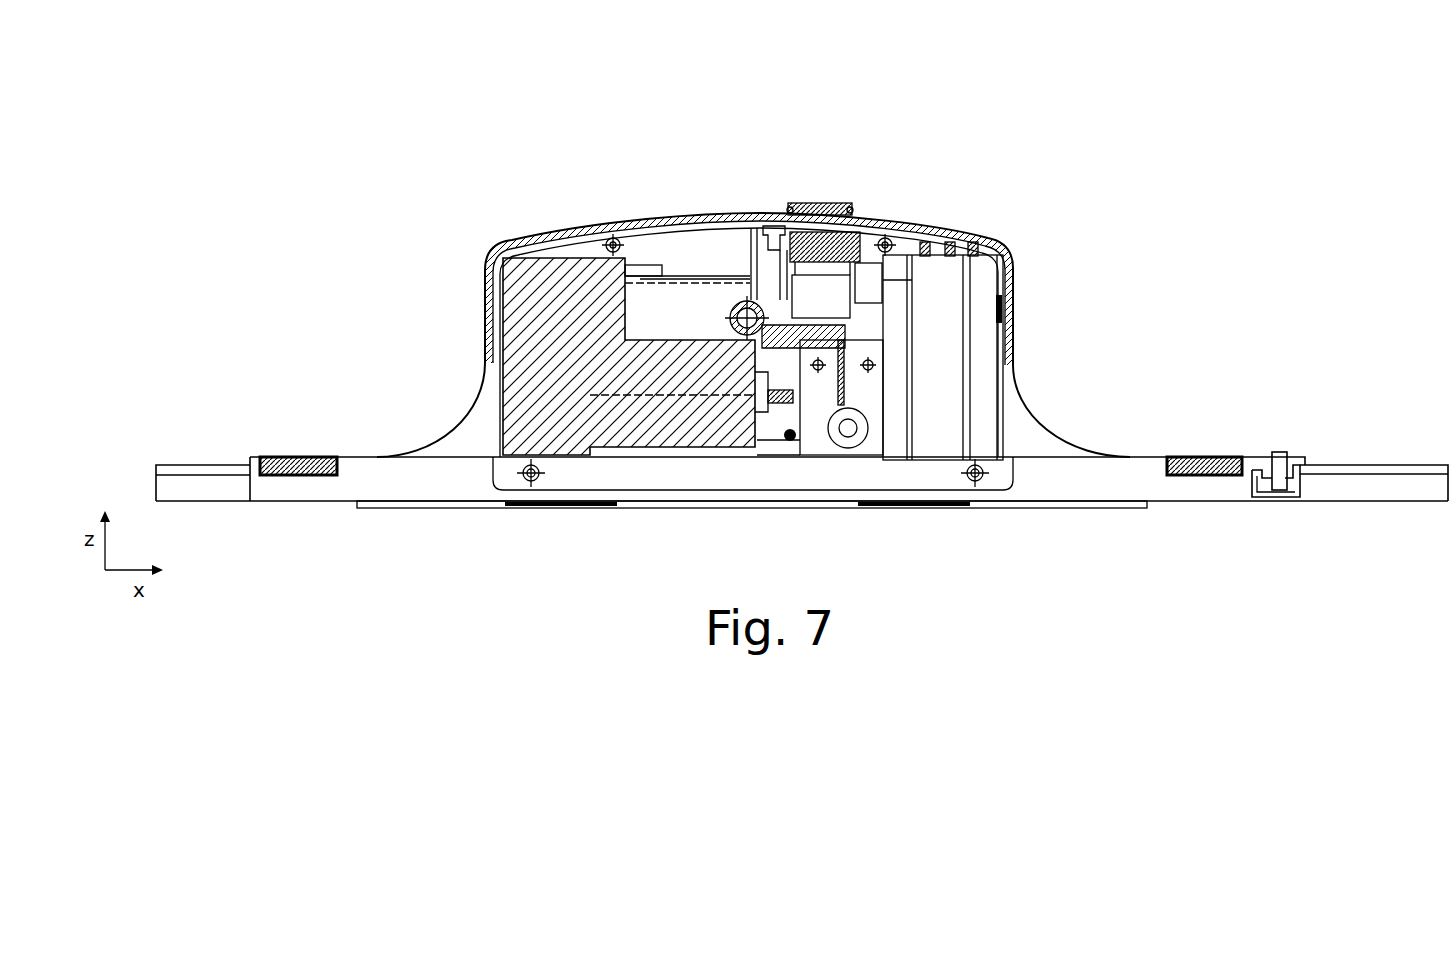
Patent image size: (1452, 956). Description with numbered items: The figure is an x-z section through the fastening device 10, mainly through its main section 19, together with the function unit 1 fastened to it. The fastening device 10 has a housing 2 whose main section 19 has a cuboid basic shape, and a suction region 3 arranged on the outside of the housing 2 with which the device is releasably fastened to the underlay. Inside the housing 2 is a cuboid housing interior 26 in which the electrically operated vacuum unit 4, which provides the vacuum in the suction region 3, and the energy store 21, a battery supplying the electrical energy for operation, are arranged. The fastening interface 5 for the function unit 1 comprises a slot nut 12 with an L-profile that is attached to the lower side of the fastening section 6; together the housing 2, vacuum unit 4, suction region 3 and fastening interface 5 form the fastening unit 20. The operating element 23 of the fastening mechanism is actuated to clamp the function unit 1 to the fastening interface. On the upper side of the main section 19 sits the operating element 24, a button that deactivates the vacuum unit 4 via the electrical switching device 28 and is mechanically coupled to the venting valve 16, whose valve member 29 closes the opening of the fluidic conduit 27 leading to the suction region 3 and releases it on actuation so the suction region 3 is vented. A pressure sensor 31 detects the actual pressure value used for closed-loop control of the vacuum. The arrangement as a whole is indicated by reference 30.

The function unit 1 is at (203, 485).
The housing 2 is at (753, 281).
The suction region 3 is at (680, 524).
The electrically operated vacuum unit 4 is at (503, 290).
The fastening interface 5 is at (1315, 512).
The fastening section 6 is at (360, 485).
The fastening device 10 is at (799, 350).
The slot nut 12 is at (1280, 490).
The venting valve 16 is at (854, 201).
The main section 19 is at (540, 235).
The fastening unit 20 is at (388, 342).
The energy store 21 is at (988, 290).
The operating element 23 is at (295, 457).
The operating element 24 is at (842, 210).
The housing interior 26 is at (697, 232).
The fluidic conduit 27 is at (770, 265).
The electrical switching device 28 is at (830, 295).
The valve member 29 is at (775, 235).
The sensor arrangement 30 is at (278, 171).
The pressure sensor 31 is at (832, 387).